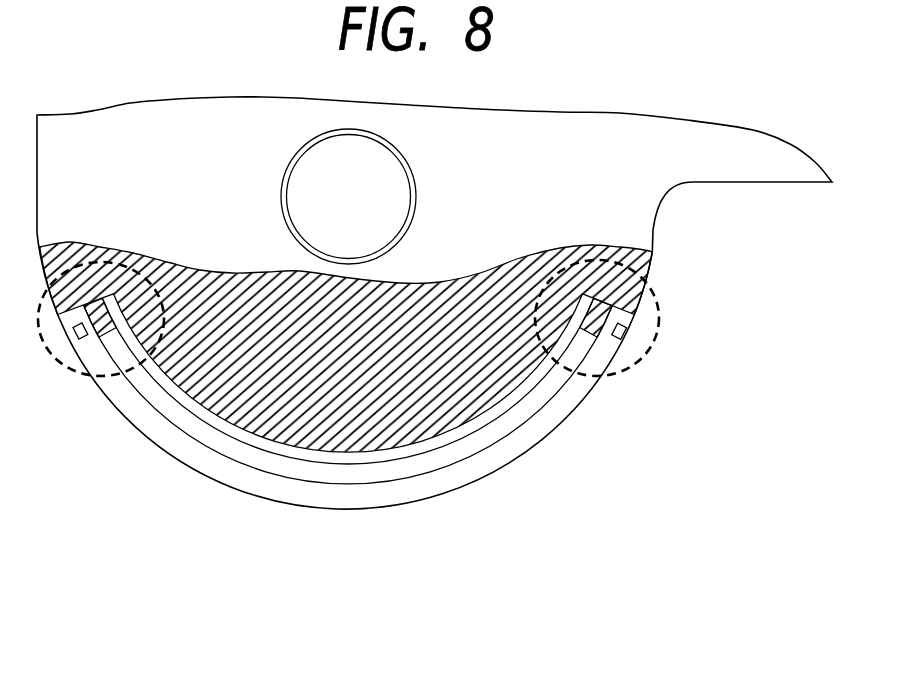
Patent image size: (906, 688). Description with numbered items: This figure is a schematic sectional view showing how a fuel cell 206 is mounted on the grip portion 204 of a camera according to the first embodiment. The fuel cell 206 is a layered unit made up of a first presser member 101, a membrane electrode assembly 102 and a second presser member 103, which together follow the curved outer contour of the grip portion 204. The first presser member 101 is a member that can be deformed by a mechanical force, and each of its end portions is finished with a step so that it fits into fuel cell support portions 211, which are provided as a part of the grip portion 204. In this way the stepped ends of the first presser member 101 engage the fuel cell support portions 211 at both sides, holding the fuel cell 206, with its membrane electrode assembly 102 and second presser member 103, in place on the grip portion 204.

The first presser member 101 is at (337, 600).
The membrane electrode assembly (MEA) 102 is at (427, 463).
The second presser member 103 is at (348, 457).
The grip portion 204 is at (258, 290).
The fuel cell 206 is at (344, 440).
The fuel cell support portions 211 is at (65, 368).